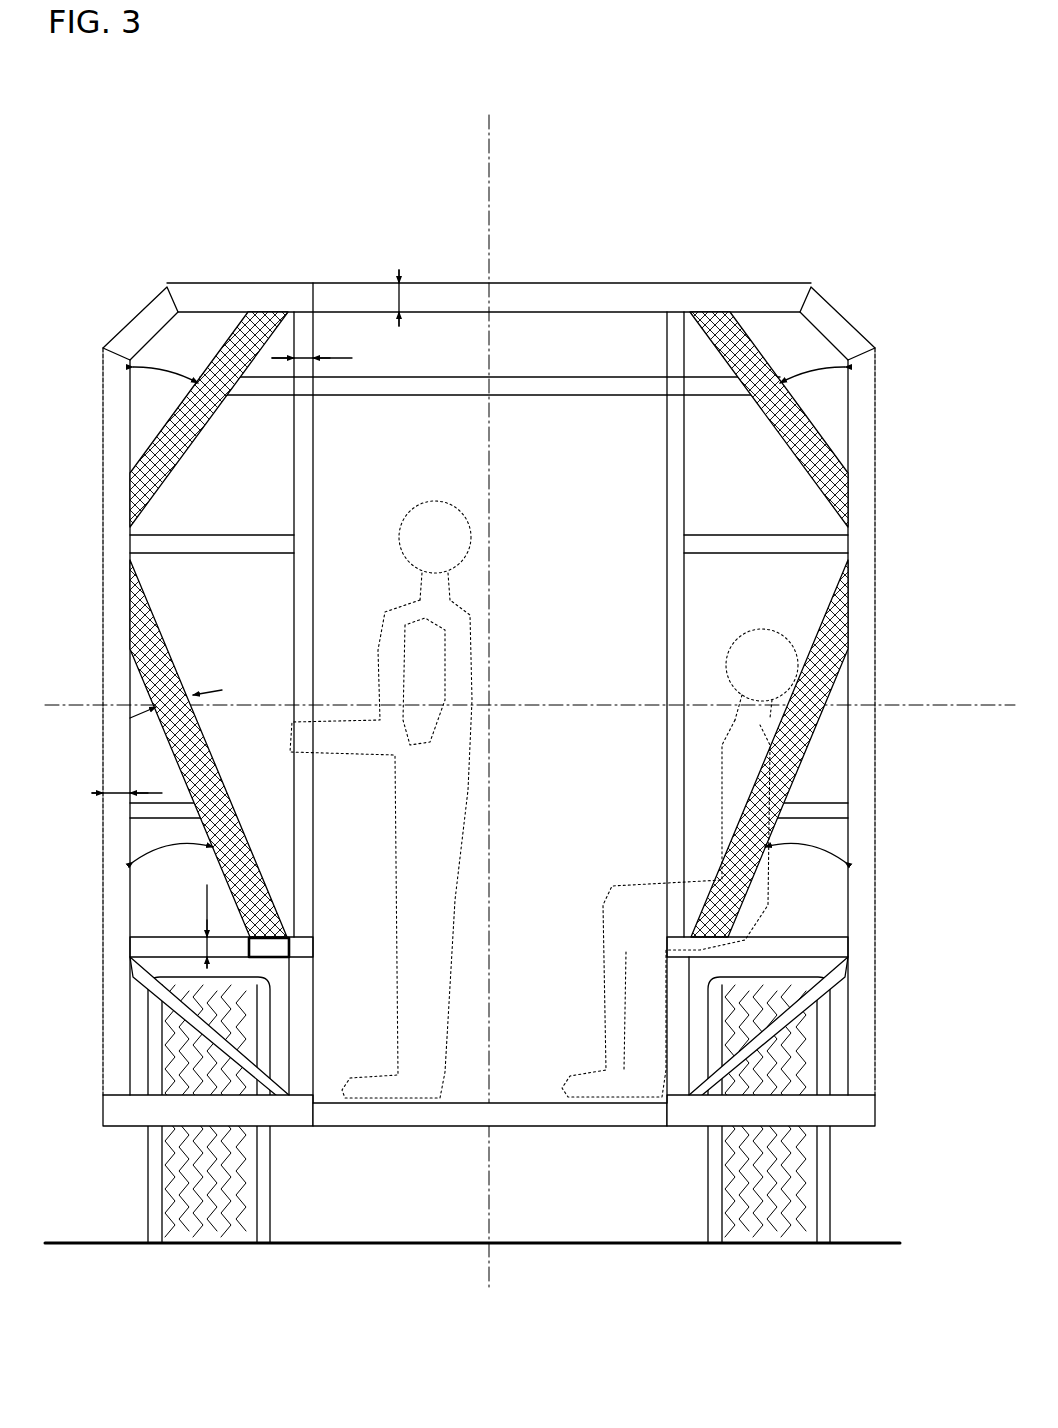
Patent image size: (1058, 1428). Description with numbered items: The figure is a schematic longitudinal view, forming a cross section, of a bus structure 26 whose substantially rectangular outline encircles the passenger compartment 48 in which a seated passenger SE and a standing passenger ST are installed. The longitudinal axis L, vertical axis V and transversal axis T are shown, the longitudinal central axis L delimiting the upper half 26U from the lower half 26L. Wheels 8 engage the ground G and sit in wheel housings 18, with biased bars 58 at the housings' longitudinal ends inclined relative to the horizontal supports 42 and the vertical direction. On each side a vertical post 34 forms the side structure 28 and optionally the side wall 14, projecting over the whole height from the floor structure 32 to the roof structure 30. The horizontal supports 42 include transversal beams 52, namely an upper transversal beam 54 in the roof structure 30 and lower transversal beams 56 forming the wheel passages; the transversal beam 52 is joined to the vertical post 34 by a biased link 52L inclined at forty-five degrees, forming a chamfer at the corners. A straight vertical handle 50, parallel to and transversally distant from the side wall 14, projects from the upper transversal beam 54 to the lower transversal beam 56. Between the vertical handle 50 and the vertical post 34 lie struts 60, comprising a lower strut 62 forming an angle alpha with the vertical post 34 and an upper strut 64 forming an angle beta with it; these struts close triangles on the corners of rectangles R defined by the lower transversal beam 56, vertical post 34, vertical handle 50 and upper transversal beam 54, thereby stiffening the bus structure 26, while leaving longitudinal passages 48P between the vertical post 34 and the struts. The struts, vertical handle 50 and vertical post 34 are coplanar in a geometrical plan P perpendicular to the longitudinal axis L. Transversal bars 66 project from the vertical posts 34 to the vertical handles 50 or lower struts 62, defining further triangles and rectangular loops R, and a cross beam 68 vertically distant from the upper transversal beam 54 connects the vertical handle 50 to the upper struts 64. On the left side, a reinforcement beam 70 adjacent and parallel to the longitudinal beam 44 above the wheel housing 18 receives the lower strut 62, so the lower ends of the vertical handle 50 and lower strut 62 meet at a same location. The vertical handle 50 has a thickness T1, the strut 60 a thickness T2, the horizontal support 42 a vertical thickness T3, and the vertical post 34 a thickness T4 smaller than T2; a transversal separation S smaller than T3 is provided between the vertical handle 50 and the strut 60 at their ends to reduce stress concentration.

The wheel 8 is at (196, 1208).
The side wall 14 is at (110, 590).
The wheel housing 18 is at (700, 1000).
The bus structure 26 is at (325, 192).
The upper half of the bus structure 26U is at (577, 461).
The lower half of the bus structure 26L is at (498, 1071).
The side structure 28 is at (86, 363).
The roof structure 30 is at (650, 170).
The floor structure 32 is at (437, 1164).
The vertical post 34 is at (860, 478).
The horizontal support 42 is at (530, 192).
The longitudinal beam 44 is at (300, 946).
The passenger compartment 48 is at (577, 571).
The longitudinal passage 48P is at (758, 308).
The vertical handle 50 is at (316, 450).
The transversal beam 52 is at (258, 306).
The biased link 52L is at (160, 300).
The upper transversal beam 54 is at (575, 308).
The lower transversal beam 56 is at (148, 943).
The biased bar 58 is at (282, 1072).
The strut 60 is at (220, 375).
The lower strut 62 is at (210, 775).
The upper strut 64 is at (165, 468).
The transversal bar 66 is at (203, 555).
The cross beam 68 is at (523, 398).
The reinforcement beam 70 is at (275, 960).
The geometrical plan P is at (300, 310).
The transversal separation S is at (684, 325).
The rectangle R is at (699, 526).
The transversal axis T is at (575, 708).
The longitudinal axis L is at (490, 703).
The vertical axis V is at (492, 1198).
The ground G is at (345, 1247).
The standing passenger ST is at (415, 556).
The seated passenger SE is at (744, 681).
The thickness of the vertical handle T1 is at (317, 345).
The thickness of the strut T2 is at (190, 694).
The vertical thickness of the horizontal support T3 is at (324, 597).
The thickness of the vertical post T4 is at (107, 777).